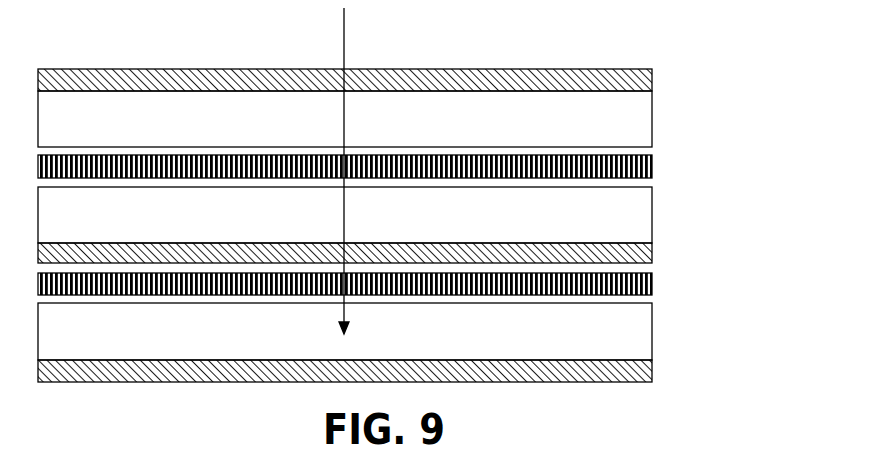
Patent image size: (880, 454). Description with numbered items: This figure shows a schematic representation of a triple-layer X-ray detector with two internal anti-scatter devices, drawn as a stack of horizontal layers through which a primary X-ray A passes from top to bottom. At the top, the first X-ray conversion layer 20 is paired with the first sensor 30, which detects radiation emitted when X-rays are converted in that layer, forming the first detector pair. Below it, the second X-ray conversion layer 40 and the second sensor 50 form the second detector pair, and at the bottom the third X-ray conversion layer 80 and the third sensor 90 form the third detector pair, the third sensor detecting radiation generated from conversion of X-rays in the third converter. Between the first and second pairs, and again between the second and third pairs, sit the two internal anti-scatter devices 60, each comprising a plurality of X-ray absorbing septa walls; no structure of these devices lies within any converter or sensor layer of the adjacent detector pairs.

The X-ray conversion layer 1 20 is at (632, 117).
The sensor 1 30 is at (652, 78).
The X-ray conversion layer 2 40 is at (630, 213).
The sensor 2 50 is at (652, 250).
The internal anti-scatter device 60 is at (632, 172).
The X-ray conversion layer 3 80 is at (640, 332).
The sensor 3 90 is at (652, 373).
The primary X-ray A is at (345, 52).